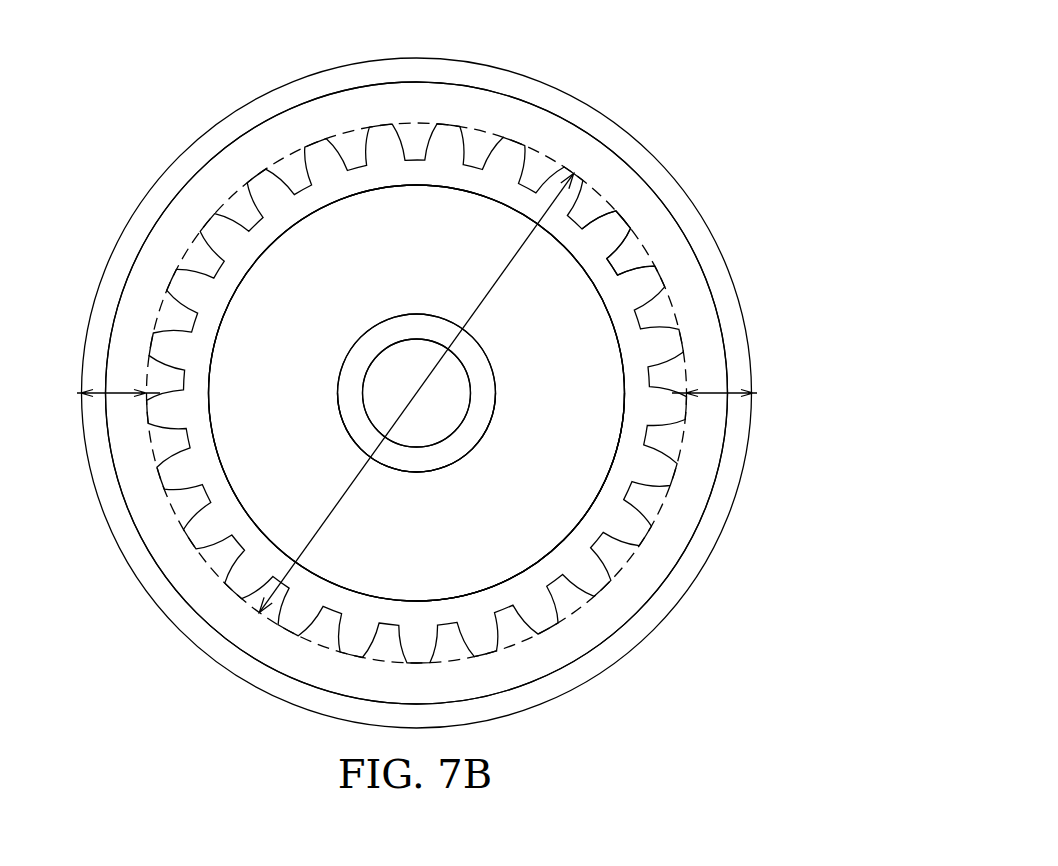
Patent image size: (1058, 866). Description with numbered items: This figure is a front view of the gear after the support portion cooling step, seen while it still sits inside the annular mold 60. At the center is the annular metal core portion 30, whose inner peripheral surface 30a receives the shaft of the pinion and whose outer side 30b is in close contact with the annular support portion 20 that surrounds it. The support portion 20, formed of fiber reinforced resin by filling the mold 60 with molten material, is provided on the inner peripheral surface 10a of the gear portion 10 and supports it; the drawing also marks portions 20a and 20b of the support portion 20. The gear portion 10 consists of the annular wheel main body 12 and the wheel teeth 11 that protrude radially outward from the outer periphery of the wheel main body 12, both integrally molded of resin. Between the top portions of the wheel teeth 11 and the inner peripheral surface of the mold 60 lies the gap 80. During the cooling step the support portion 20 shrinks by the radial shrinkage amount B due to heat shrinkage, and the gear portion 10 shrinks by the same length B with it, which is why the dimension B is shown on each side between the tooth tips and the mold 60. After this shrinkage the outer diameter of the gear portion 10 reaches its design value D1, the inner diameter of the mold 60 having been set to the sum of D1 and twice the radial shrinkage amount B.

The gear portion 10 is at (778, 138).
The inner peripheral surface 10a is at (496, 205).
The wheel teeth 11 is at (608, 230).
The wheel main body 12 is at (618, 297).
The support portion 20 is at (527, 488).
The hub of gear body 20a is at (424, 452).
The outer periphery of gear body 20b is at (557, 551).
The core portion 30 is at (412, 333).
The inner peripheral surface 30a is at (420, 345).
The outer surface of shaft 30b is at (395, 315).
The mold 60 is at (625, 152).
The gap 80 is at (683, 285).
The design value of the outer diameter of the gear portion D1 is at (416, 392).
The radial shrinkage amount B is at (417, 384).